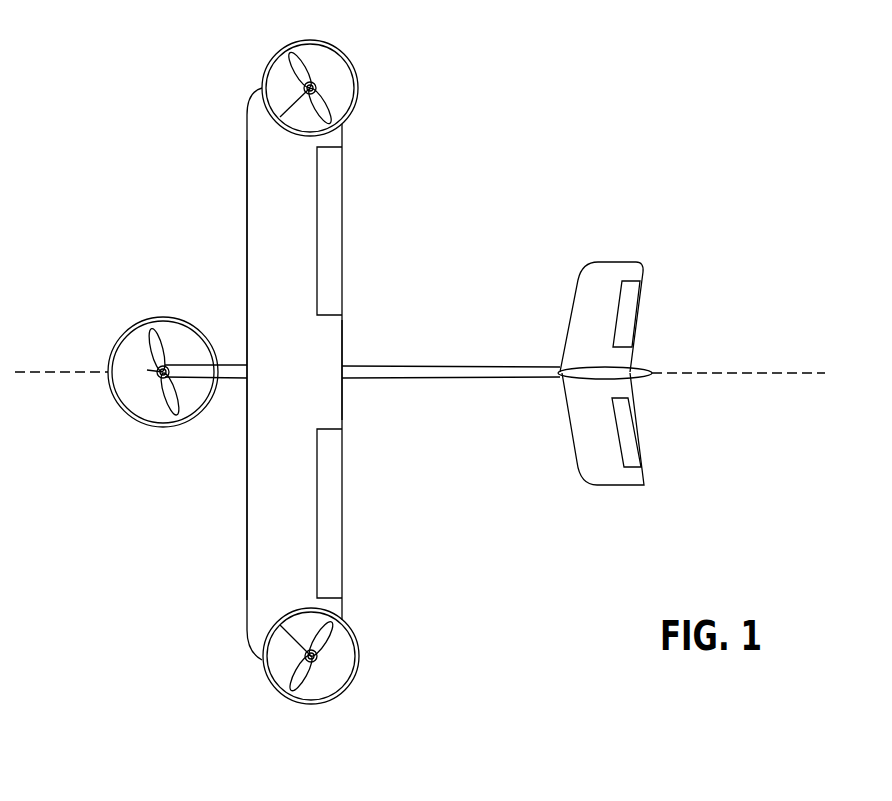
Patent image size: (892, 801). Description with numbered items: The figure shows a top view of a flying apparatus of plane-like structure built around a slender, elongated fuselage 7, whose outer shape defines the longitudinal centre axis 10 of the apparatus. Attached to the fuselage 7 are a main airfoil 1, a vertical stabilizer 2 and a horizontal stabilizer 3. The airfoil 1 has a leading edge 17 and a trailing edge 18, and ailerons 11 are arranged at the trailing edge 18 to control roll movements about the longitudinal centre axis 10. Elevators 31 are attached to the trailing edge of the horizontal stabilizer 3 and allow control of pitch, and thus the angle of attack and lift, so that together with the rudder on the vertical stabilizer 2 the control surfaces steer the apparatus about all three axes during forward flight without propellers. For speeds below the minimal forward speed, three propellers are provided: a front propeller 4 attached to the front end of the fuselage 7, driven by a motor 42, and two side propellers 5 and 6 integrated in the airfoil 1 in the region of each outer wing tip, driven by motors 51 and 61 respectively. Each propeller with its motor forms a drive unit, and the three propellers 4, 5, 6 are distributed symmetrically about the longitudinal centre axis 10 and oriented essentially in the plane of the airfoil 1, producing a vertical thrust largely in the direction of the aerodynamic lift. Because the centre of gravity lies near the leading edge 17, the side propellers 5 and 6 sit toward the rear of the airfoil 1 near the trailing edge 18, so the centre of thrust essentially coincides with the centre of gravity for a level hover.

The main airfoil 1 is at (265, 178).
The leading edge 17 is at (247, 246).
The trailing edge 18 is at (343, 330).
The ailerons 11 is at (333, 188).
The side propeller 6 is at (298, 67).
The motor 61 is at (317, 87).
The side propeller 5 is at (300, 677).
The motor 51 is at (320, 660).
The front propeller 4 is at (172, 402).
The motor 42 is at (147, 375).
The fuselage 7 is at (523, 374).
The vertical stabilizer 2 is at (562, 373).
The horizontal stabilizer 3 is at (607, 268).
The elevators 31 is at (629, 438).
The longitudinal centre axis 10 is at (763, 374).